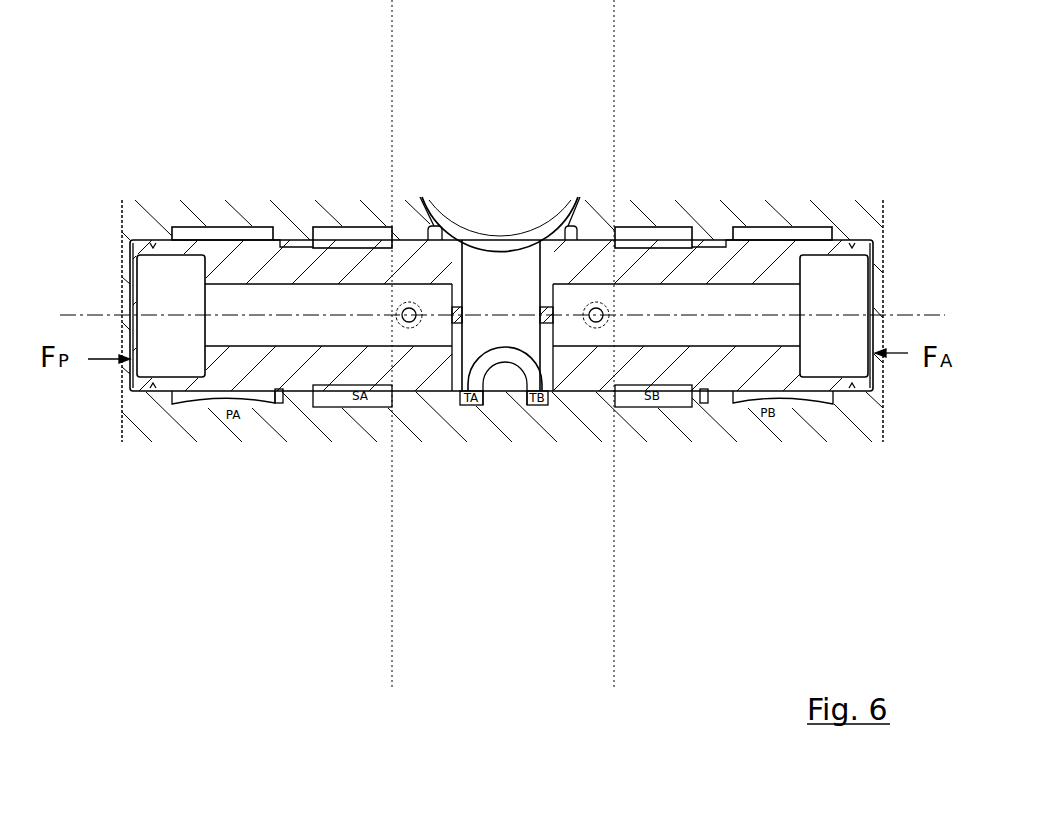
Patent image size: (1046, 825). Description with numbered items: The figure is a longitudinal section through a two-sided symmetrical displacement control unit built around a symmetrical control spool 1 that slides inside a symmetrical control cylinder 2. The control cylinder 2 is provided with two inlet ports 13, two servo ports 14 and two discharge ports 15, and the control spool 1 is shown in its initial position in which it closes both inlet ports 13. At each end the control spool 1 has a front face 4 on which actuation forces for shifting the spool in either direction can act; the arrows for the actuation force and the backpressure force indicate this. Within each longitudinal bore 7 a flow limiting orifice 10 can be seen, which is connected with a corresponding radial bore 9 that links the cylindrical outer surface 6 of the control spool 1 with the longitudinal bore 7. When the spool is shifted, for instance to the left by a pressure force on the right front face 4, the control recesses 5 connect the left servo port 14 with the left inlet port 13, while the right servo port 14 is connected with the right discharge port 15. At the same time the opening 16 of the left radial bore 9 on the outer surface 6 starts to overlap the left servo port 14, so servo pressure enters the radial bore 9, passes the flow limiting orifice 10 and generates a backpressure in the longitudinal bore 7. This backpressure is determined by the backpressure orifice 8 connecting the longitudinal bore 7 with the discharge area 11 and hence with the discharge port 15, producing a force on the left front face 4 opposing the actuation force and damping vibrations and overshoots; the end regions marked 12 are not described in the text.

The control spool 1 is at (709, 262).
The control cylinder 2 is at (162, 208).
The front face 4 is at (132, 248).
The control recess 5 is at (412, 238).
The cylindrical outer surface 6 is at (185, 393).
The longitudinal bore 7 is at (279, 327).
The backpressure orifice 8 is at (461, 307).
The radial bore 9 is at (584, 305).
The flow limiting orifice 10 is at (405, 322).
The discharge area 11 is at (484, 292).
The end face 12 is at (860, 242).
The inlet port 13 is at (222, 230).
The servo port 14 is at (352, 235).
The discharge port 15 is at (461, 396).
The opening 16 is at (417, 327).